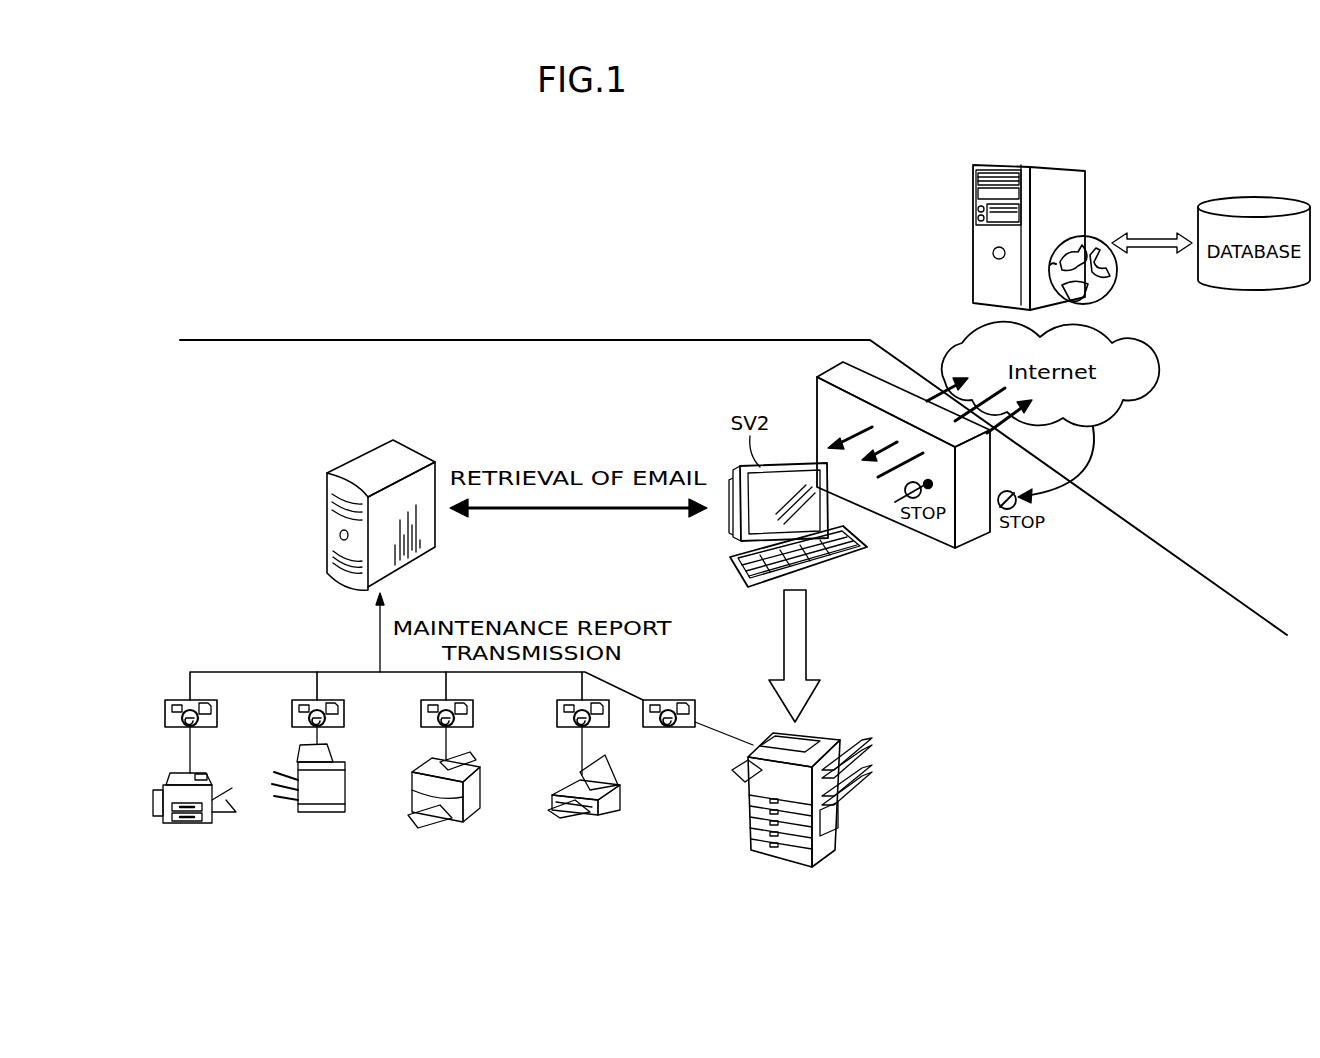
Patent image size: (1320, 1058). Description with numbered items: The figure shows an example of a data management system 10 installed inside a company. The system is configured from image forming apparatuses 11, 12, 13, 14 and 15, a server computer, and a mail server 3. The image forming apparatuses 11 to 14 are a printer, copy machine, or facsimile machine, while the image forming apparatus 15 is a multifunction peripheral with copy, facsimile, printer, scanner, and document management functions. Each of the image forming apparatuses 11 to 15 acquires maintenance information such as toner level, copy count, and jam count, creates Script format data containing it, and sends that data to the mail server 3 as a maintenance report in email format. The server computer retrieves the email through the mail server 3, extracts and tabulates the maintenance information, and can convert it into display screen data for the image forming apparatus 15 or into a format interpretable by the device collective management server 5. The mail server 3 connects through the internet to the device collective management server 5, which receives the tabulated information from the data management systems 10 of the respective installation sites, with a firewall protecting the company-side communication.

The mail server 3 is at (327, 527).
The device collective management server 5 is at (1086, 197).
The data management system 10 is at (257, 448).
The image forming apparatus 11 is at (190, 824).
The image forming apparatus 12 is at (318, 812).
The image forming apparatus 13 is at (450, 818).
The image forming apparatus 14 is at (590, 813).
The image forming apparatus 15 is at (850, 808).